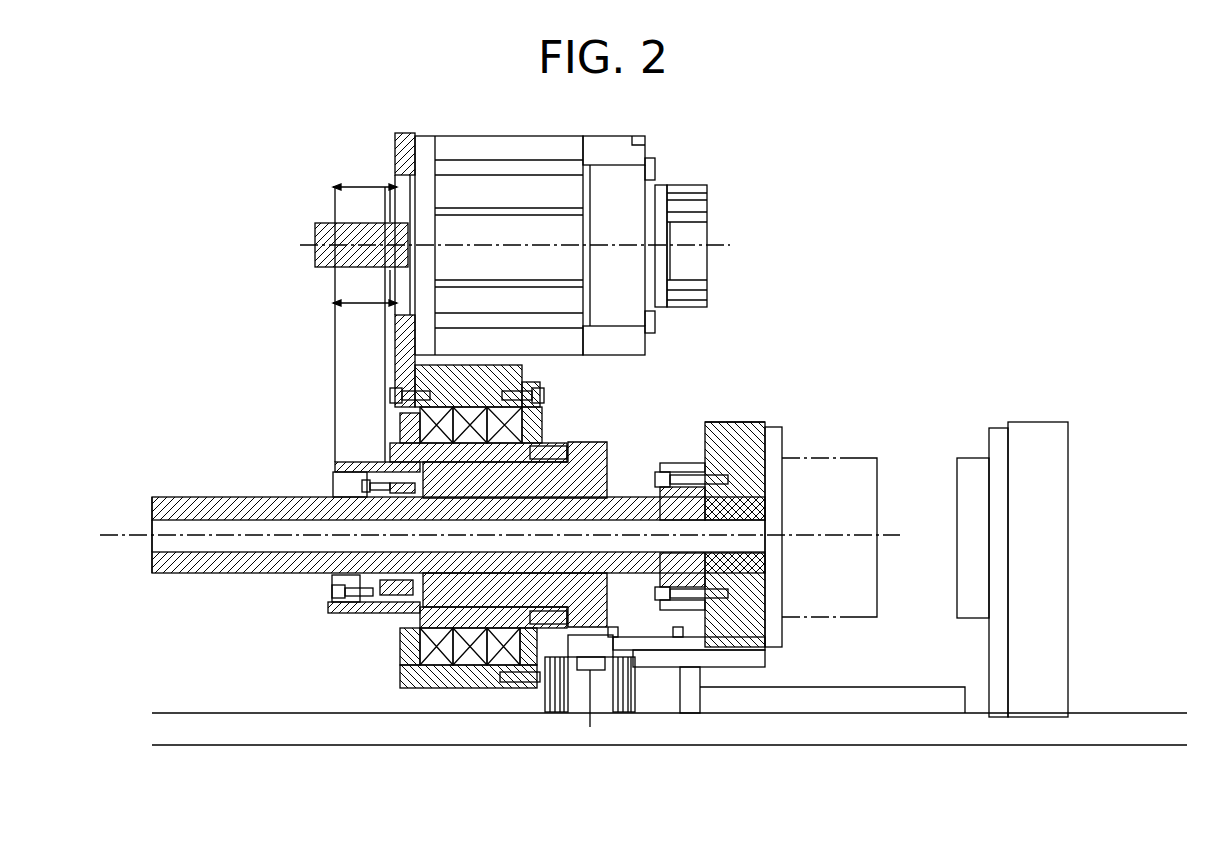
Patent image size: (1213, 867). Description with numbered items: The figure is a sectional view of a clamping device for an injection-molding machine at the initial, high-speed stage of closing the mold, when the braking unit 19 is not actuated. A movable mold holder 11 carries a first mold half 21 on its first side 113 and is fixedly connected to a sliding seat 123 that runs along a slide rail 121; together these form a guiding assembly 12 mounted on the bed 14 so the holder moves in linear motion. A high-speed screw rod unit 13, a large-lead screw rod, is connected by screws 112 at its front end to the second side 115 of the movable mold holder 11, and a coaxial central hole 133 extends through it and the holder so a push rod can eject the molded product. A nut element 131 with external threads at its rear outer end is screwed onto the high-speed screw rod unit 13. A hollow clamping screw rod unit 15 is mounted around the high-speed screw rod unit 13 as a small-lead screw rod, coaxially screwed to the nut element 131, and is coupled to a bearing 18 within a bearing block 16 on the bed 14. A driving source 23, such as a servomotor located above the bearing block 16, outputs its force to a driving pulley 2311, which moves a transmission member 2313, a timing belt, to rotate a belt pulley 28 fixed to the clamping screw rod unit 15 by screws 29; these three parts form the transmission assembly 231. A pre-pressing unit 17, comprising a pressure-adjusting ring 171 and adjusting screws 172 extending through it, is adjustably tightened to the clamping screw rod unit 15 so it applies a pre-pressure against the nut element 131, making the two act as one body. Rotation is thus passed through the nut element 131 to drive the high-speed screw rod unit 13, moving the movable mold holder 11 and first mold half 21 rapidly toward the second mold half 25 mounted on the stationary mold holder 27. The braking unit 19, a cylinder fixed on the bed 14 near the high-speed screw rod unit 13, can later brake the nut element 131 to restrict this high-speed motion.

The movable mold holder 11 is at (729, 504).
The screws 112 is at (680, 462).
The first side 113 is at (770, 428).
The second side 115 is at (705, 422).
The guiding assembly 12 is at (766, 734).
The slide rail 121 is at (740, 705).
The sliding seat 123 is at (680, 712).
The high-speed screw rod unit 13 is at (477, 504).
The nut element 131 is at (607, 440).
The central hole 133 is at (152, 512).
The bed 14 is at (870, 732).
The clamping screw rod unit 15 is at (403, 450).
The bearing block 16 is at (397, 380).
The pre-pressing unit 17 is at (565, 396).
The pressure-adjusting ring 171 is at (545, 440).
The adjusting screws 172 is at (567, 442).
The bearing 18 is at (407, 427).
The braking unit 19 is at (603, 700).
The first mold half 21 is at (867, 458).
The driving source 23 is at (532, 148).
The transmission assembly 231 is at (280, 323).
The driving pulley 2311 is at (350, 283).
The transmission member 2313 is at (350, 335).
The second mold half 25 is at (978, 465).
The stationary mold holder 27 is at (1047, 430).
The belt pulley 28 is at (330, 607).
The screws 29 is at (350, 588).